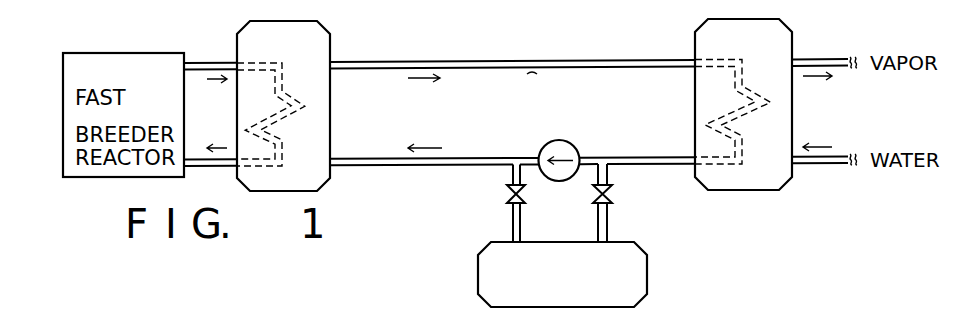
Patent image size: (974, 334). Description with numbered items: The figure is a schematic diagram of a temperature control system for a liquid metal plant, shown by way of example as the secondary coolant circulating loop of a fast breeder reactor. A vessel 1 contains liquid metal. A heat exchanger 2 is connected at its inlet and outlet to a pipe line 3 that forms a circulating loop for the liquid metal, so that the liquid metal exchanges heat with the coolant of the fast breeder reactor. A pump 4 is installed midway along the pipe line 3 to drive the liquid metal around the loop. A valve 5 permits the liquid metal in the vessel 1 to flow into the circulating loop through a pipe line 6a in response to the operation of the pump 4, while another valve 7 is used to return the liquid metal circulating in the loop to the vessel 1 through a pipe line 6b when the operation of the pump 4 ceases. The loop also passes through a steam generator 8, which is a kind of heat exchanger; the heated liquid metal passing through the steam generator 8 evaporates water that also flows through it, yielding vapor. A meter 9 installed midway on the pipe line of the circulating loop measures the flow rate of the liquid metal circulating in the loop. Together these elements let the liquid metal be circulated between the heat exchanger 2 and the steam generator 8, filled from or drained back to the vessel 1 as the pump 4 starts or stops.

The vessel 1 is at (641, 247).
The heat exchanger 2 is at (326, 25).
The pipe line 3 is at (423, 62).
The pump 4 is at (563, 141).
The valve 5 is at (612, 193).
The pipe line 6a is at (608, 217).
The pipe line 6b is at (512, 221).
The valve 7 is at (507, 193).
The steam generator 8 is at (784, 23).
The meter 9 is at (535, 55).